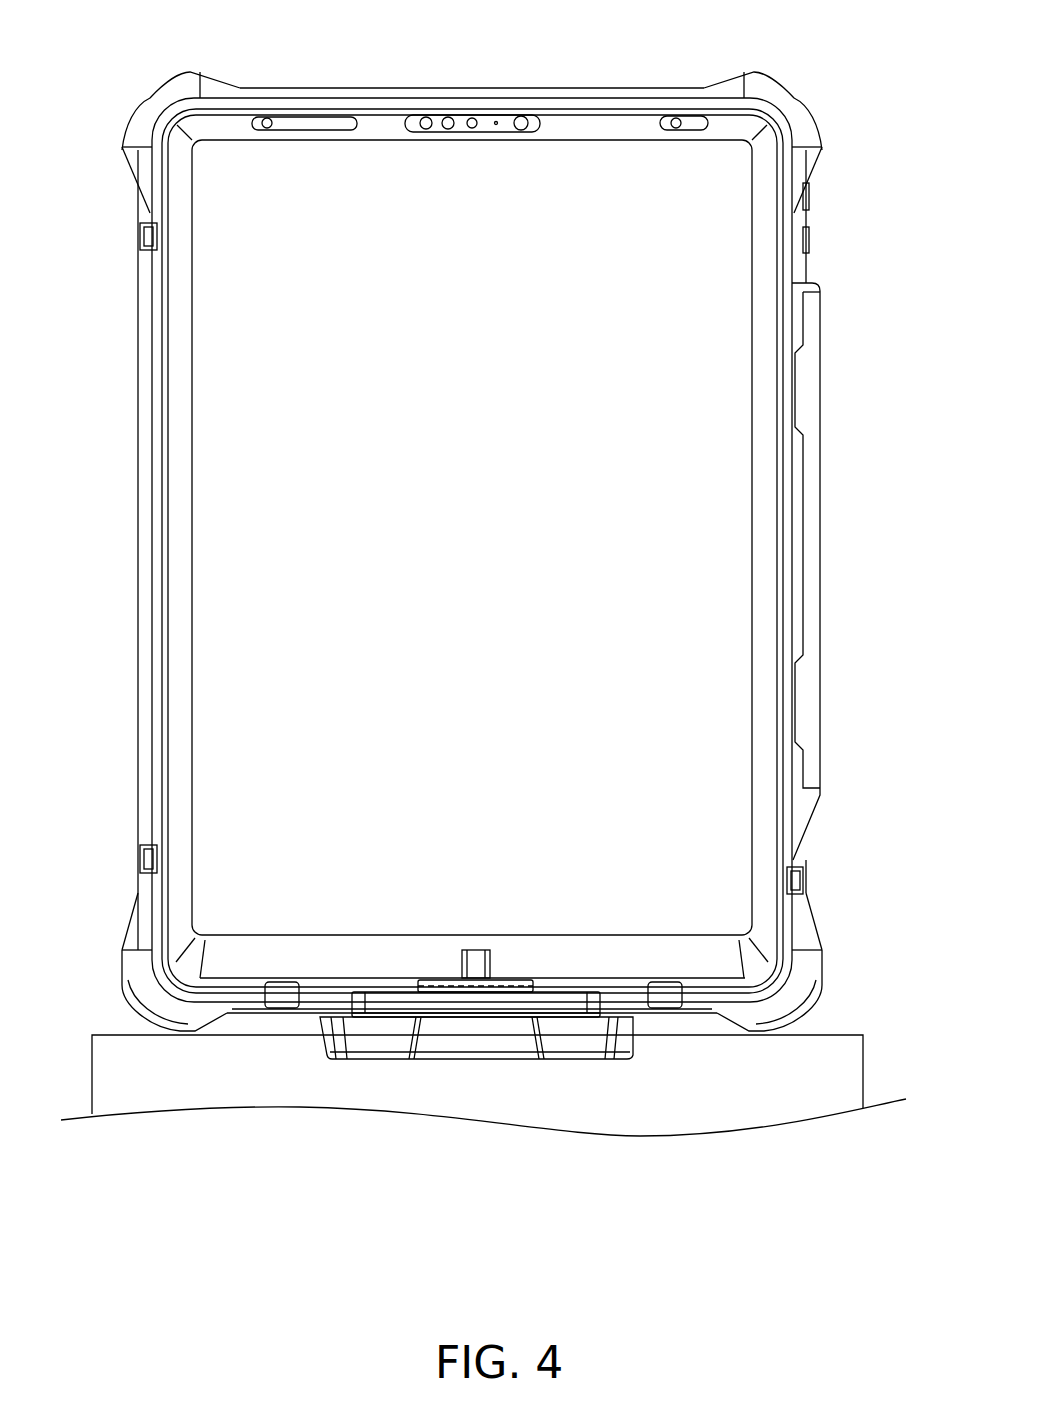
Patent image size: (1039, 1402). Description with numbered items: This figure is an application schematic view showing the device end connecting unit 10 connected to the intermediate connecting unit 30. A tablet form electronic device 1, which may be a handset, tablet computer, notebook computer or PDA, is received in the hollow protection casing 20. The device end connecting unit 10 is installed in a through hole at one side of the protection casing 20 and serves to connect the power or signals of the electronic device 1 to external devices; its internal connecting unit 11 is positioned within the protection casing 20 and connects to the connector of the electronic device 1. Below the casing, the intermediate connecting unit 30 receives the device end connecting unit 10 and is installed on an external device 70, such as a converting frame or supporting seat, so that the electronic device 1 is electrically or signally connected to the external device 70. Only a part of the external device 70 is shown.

The electronic device 1 is at (235, 387).
The protection casing 20 is at (292, 89).
The internal connecting unit 11 is at (462, 950).
The device end connecting unit 10 is at (577, 992).
The intermediate connecting unit 30 is at (567, 1042).
The external device 70 is at (865, 1071).